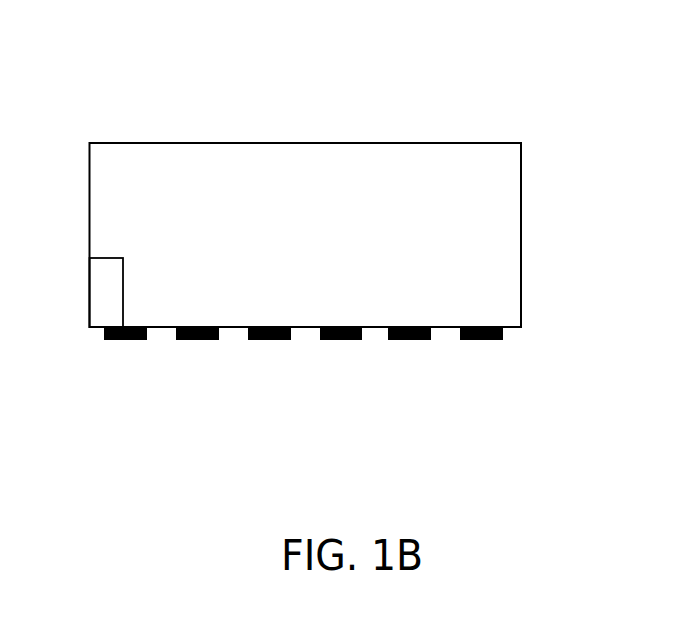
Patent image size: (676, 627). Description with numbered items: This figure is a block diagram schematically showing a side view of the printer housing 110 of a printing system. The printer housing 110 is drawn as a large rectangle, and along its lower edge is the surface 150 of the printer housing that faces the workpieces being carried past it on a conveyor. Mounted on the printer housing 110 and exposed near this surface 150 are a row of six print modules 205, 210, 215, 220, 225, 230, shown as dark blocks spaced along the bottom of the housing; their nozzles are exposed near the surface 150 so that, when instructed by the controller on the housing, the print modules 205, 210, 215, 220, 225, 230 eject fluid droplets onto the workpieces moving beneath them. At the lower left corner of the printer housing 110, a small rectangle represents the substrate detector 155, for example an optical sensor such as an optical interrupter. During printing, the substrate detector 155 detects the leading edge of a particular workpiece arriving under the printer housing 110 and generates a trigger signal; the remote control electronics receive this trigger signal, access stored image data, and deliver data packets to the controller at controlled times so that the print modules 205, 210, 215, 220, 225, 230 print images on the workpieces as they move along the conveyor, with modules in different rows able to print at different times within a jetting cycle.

The printer housing 110 is at (364, 116).
The substrate detector 155 is at (117, 282).
The surface of the printer housing 150 is at (447, 327).
The print module 205 is at (139, 340).
The print module 210 is at (202, 340).
The print module 215 is at (268, 340).
The print module 220 is at (345, 340).
The print module 225 is at (412, 340).
The print module 230 is at (494, 340).